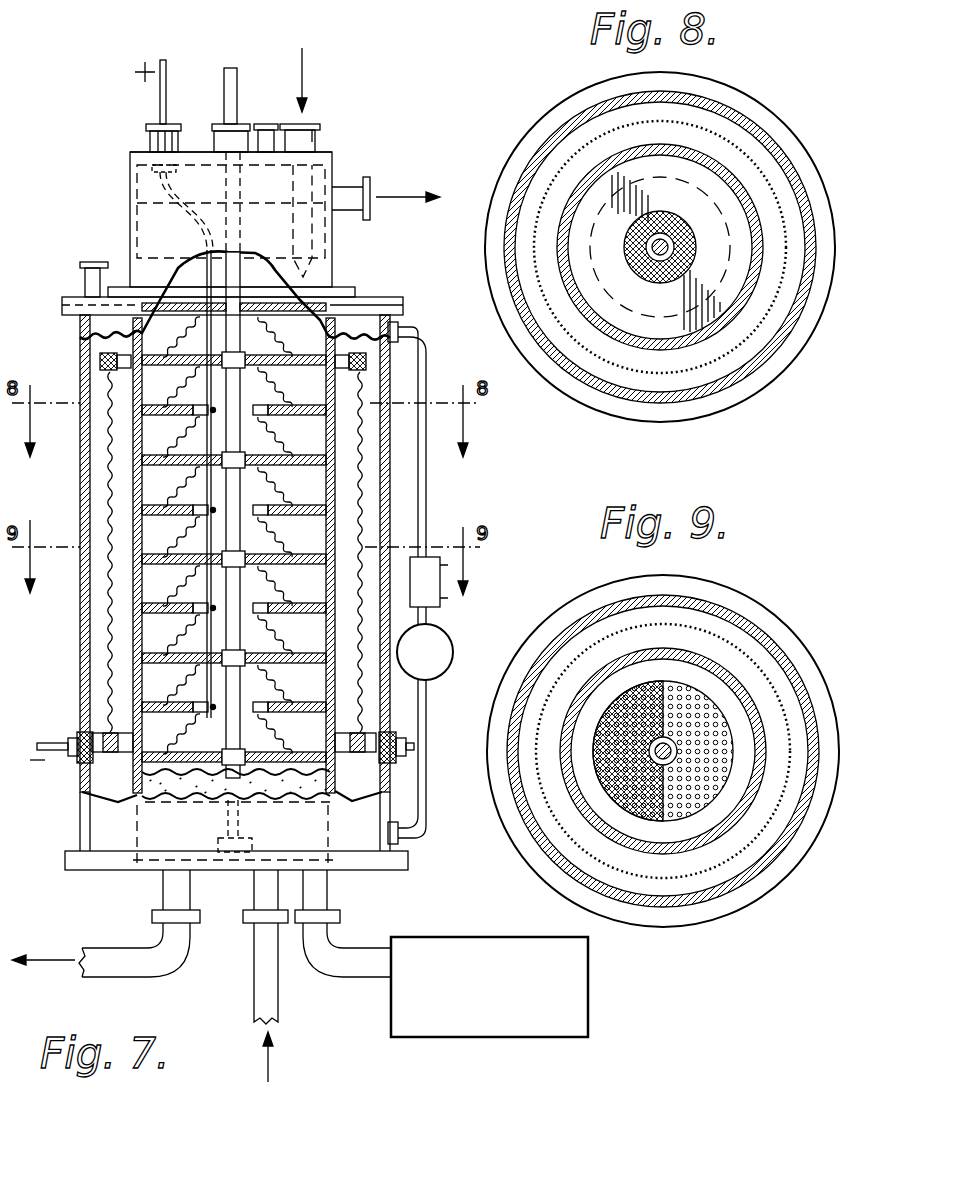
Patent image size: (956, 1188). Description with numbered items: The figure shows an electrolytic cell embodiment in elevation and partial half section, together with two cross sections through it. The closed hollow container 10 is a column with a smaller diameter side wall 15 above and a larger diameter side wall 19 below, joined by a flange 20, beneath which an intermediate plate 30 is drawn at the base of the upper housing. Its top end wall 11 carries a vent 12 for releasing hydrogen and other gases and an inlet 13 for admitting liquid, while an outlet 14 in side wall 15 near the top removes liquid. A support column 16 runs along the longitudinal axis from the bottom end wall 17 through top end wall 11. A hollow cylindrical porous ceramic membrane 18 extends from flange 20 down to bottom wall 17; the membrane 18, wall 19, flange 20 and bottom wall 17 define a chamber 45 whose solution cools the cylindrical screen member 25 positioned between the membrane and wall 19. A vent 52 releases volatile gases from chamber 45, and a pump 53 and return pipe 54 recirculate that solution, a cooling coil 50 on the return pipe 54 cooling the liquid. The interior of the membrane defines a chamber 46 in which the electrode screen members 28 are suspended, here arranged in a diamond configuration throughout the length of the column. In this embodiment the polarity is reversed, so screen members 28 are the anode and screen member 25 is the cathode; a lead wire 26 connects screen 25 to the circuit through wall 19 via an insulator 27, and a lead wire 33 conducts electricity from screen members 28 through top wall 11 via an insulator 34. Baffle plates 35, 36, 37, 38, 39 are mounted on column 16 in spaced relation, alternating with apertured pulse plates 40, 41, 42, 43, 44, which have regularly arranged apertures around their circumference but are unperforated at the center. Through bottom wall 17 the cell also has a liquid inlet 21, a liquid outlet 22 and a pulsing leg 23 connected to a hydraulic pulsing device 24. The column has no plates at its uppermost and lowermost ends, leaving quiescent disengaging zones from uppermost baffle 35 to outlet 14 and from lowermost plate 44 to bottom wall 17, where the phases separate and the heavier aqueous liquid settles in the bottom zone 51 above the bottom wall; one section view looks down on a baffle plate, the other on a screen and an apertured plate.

In FIG. 7, the closed hollow container 10 is at (72, 278).
In FIG. 8, the closed hollow container 10 is at (815, 125).
In FIG. 9, the closed hollow container 10 is at (805, 628).
In FIG. 7, the top end wall 11 is at (197, 150).
In FIG. 7, the vent 12 is at (268, 122).
In FIG. 7, the inlet 13 is at (305, 138).
In FIG. 7, the outlet 14 is at (346, 190).
In FIG. 7, the smaller diameter side wall 15 is at (130, 232).
In FIG. 7, the support column 16 is at (232, 66).
In FIG. 8, the support column 16 is at (675, 258).
In FIG. 9, the support column 16 is at (667, 740).
In FIG. 7, the bottom end wall 17 is at (113, 866).
In FIG. 7, the porous ceramic membrane 18 is at (337, 488).
In FIG. 8, the porous ceramic membrane 18 is at (750, 190).
In FIG. 9, the porous ceramic membrane 18 is at (760, 695).
In FIG. 7, the larger diameter side wall 19 is at (388, 463).
In FIG. 8, the larger diameter side wall 19 is at (565, 127).
In FIG. 9, the larger diameter side wall 19 is at (590, 610).
In FIG. 7, the flange 20 is at (382, 300).
In FIG. 7, the liquid inlet 21 is at (262, 888).
In FIG. 7, the liquid outlet 22 is at (170, 890).
In FIG. 7, the pulsing leg 23 is at (316, 890).
In FIG. 7, the hydraulic pulsing device 24 is at (455, 1040).
In FIG. 7, the cylindrical screen member 25 is at (182, 395).
In FIG. 8, the cylindrical screen member 25 is at (680, 280).
In FIG. 9, the cylindrical screen member 25 is at (600, 790).
In FIG. 7, the lead wire 26 is at (168, 68).
In FIG. 7, the insulator 27 is at (146, 140).
In FIG. 7, the electrode screen members 28 is at (110, 650).
In FIG. 8, the electrode screen members 28 is at (720, 360).
In FIG. 9, the electrode screen members 28 is at (700, 625).
In FIG. 7, the intermediate plate 30 is at (345, 290).
In FIG. 7, the lead wire 33 is at (52, 745).
In FIG. 7, the insulator 34 is at (75, 733).
In FIG. 7, the baffle plate 35 is at (287, 300).
In FIG. 7, the baffle plate 36 is at (286, 405).
In FIG. 8, the baffle plate 36 is at (668, 335).
In FIG. 7, the baffle plate 37 is at (286, 505).
In FIG. 7, the baffle plate 38 is at (286, 603).
In FIG. 7, the baffle plate 39 is at (286, 702).
In FIG. 7, the apertured plate member 40 is at (318, 355).
In FIG. 7, the apertured plate member 41 is at (318, 455).
In FIG. 7, the apertured plate member 42 is at (318, 554).
In FIG. 9, the apertured plate member 42 is at (690, 835).
In FIG. 7, the apertured plate member 43 is at (318, 653).
In FIG. 7, the apertured plate member 44 is at (318, 752).
In FIG. 7, the chamber 45 is at (155, 622).
In FIG. 7, the chamber 46 is at (395, 510).
In FIG. 9, the chamber 46 is at (780, 830).
In FIG. 7, the cooling coil 50 is at (448, 567).
In FIG. 7, the bottom chamber 51 is at (160, 816).
In FIG. 7, the vent 52 is at (90, 285).
In FIG. 7, the pump 53 is at (448, 600).
In FIG. 7, the return pipe 54 is at (430, 358).